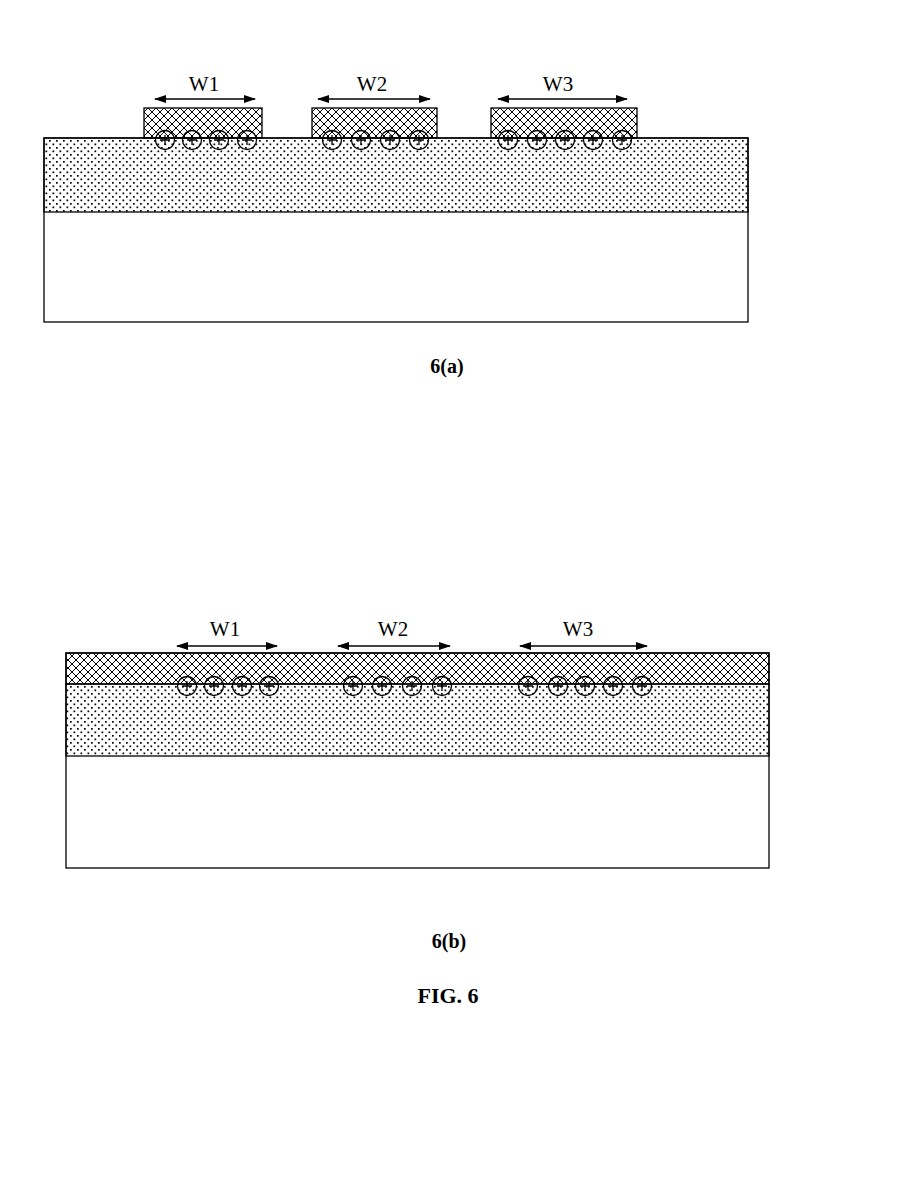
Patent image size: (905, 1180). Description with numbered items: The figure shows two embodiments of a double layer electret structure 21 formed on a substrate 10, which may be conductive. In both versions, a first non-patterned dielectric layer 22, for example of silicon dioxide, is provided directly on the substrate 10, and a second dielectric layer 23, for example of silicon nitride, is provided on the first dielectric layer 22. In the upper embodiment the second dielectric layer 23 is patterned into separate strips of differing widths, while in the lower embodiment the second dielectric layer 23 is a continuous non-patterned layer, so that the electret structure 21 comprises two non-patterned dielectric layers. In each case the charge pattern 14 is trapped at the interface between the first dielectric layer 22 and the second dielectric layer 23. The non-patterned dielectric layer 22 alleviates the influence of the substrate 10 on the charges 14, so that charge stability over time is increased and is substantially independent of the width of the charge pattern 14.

The substrate 10 is at (406, 503).
The charge pattern 14 is at (147, 137).
The electret structure 21 is at (752, 98).
The first non-patterned dielectric layer 22 is at (406, 447).
The second dielectric layer 23 is at (260, 107).